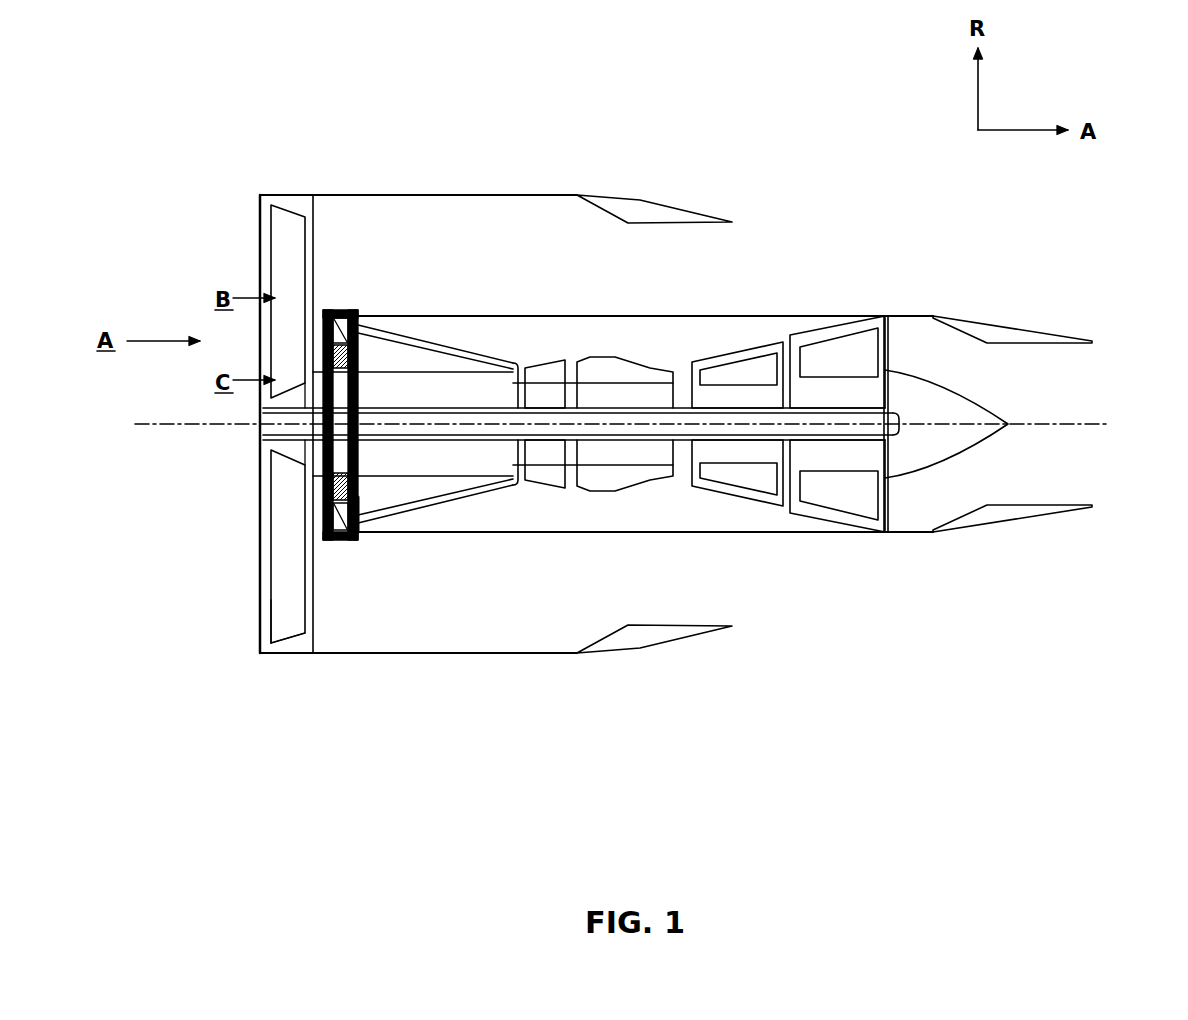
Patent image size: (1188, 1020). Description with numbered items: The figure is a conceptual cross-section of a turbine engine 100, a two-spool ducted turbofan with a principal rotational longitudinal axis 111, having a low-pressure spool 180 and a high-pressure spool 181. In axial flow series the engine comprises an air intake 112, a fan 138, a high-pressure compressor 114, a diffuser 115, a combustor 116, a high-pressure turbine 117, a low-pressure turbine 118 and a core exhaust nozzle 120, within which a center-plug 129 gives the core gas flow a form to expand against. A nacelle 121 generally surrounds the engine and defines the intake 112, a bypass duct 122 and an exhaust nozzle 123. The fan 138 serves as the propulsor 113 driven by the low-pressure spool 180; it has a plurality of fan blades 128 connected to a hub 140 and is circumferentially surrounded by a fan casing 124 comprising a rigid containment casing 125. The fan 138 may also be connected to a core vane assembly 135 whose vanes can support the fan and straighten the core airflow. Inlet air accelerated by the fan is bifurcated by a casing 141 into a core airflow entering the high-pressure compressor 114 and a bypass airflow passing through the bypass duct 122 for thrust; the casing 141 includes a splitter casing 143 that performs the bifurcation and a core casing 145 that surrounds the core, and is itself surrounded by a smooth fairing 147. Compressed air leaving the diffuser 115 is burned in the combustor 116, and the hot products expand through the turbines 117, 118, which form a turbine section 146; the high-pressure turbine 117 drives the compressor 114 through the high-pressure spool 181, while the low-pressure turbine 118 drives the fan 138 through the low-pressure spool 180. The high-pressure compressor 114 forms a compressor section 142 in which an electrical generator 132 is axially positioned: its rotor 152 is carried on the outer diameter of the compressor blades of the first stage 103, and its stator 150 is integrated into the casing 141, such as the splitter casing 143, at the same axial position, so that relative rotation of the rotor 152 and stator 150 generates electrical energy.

The turbine engine 100 is at (182, 95).
The first stage 103 is at (362, 603).
The longitudinal axis 111 is at (1100, 422).
The air intake 112 is at (262, 268).
The propulsor 113 is at (237, 558).
The high-pressure compressor 114 is at (462, 350).
The diffuser 115 is at (543, 482).
The combustor 116 is at (610, 487).
The high-pressure turbine 117 is at (765, 348).
The low-pressure turbine 118 is at (838, 338).
The core exhaust nozzle 120 is at (1072, 335).
The nacelle 121 is at (265, 187).
The bypass duct 122 is at (548, 256).
The exhaust nozzle 123 is at (715, 213).
The fan casing 124 is at (298, 193).
The rigid containment casing 125 is at (308, 197).
The fan blades 128 is at (268, 647).
The center-plug 129 is at (968, 386).
The electrical generator 132 is at (355, 308).
The core vane assembly 135 is at (305, 455).
The fan 138 is at (285, 640).
The hub 140 is at (247, 445).
The casing 141 is at (462, 502).
The compressor section 142 is at (438, 540).
The splitter casing 143 is at (316, 318).
The core casing 145 is at (510, 362).
The turbine section 146 is at (698, 545).
The fairing 147 is at (607, 317).
The stator 150 is at (358, 542).
The rotor 152 is at (358, 497).
The low-pressure spool 180 is at (685, 415).
The high-pressure spool 181 is at (688, 443).